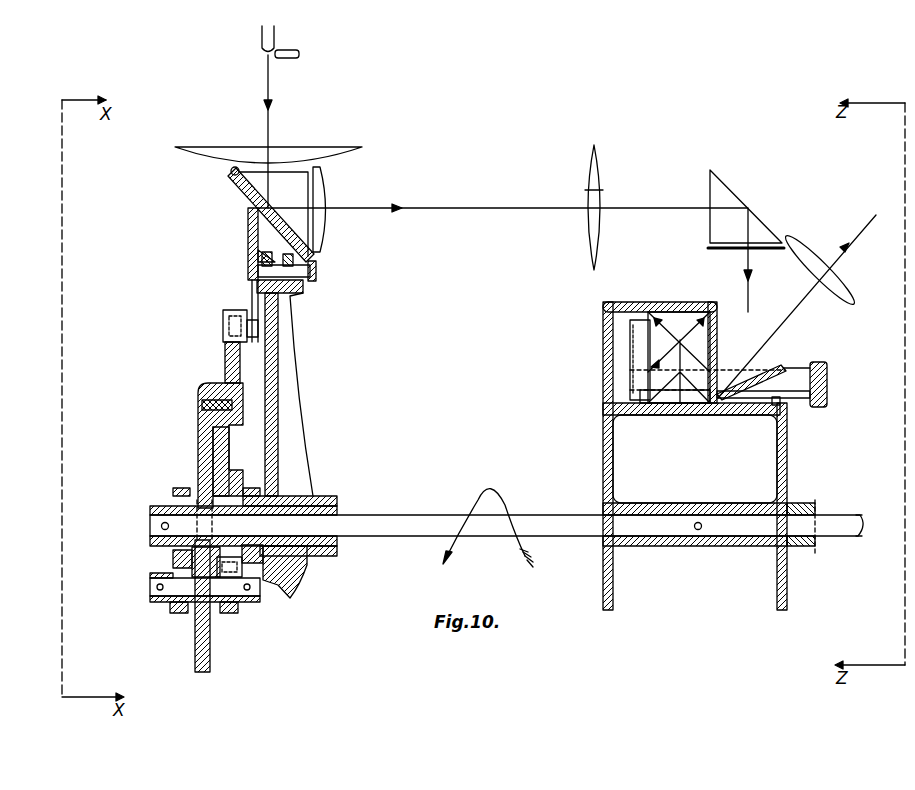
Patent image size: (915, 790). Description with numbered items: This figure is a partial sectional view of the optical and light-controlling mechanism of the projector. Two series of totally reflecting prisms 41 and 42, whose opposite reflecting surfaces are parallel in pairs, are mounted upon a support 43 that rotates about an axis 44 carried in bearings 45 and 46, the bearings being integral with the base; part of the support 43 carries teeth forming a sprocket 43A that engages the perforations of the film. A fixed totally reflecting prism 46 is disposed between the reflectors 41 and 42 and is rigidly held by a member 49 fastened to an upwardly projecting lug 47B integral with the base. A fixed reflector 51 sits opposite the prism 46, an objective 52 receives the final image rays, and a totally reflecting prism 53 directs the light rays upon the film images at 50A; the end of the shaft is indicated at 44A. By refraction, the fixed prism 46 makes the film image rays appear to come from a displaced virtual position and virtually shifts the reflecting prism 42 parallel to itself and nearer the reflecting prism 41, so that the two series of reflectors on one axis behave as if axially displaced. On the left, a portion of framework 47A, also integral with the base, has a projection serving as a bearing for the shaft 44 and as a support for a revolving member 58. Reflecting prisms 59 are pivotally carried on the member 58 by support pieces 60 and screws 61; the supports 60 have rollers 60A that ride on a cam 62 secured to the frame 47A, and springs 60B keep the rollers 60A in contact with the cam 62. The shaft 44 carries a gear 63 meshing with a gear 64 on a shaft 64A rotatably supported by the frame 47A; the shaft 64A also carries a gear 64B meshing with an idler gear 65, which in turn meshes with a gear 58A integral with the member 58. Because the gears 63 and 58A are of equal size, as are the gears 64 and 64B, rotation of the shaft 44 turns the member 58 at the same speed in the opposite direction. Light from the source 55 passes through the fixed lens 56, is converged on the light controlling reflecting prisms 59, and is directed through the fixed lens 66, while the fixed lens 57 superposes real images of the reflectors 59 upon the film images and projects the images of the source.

The totally reflecting prism 41 is at (665, 406).
The totally reflecting prism 42 is at (664, 318).
The support 43 is at (615, 488).
The sprocket 43A is at (778, 401).
The axis 44 is at (540, 515).
The shaft end 44A is at (823, 538).
The bearing 45 is at (795, 503).
The totally reflecting prism 46 is at (337, 544).
The frame 47A is at (198, 665).
The lug 47B is at (830, 390).
The member 49 is at (797, 306).
The film image 50A is at (722, 251).
The fixed reflector 51 is at (772, 372).
The objective 52 is at (846, 282).
The totally reflecting prism 53 is at (735, 192).
The light source 55 is at (298, 58).
The fixed lens 56 is at (312, 150).
The fixed lens 57 is at (590, 190).
The revolving member 58 is at (298, 420).
The gear 58A is at (251, 487).
The reflecting prism 59 is at (243, 185).
The support piece 60 is at (250, 234).
The roller 60A is at (228, 312).
The spring 60B is at (253, 262).
The screw 61 is at (316, 270).
The cam 62 is at (224, 358).
The gear 63 is at (176, 489).
The gear 64 is at (177, 614).
The shaft 64A is at (150, 588).
The gear 64B is at (229, 614).
The idler gear 65 is at (173, 556).
The fixed lens 66 is at (322, 195).